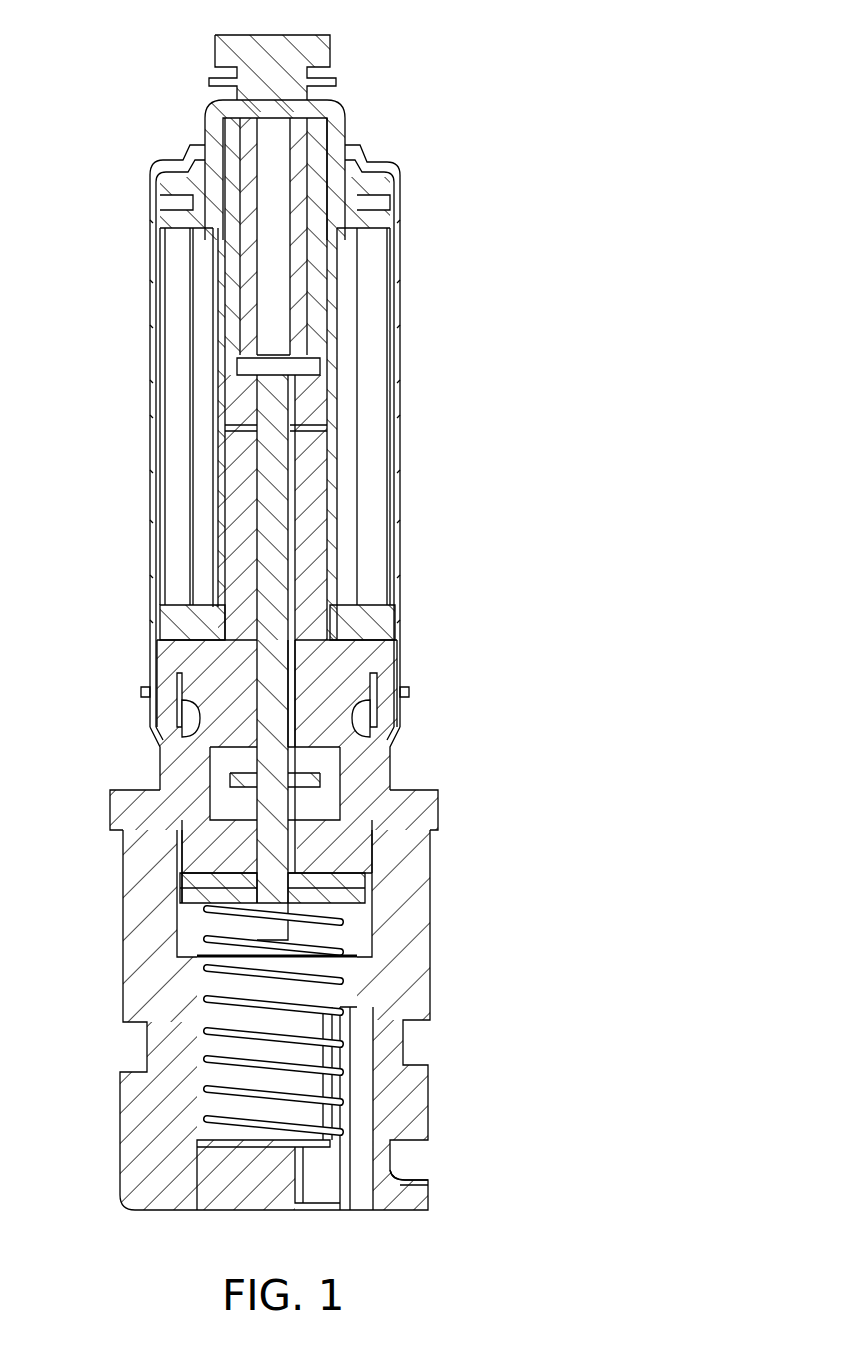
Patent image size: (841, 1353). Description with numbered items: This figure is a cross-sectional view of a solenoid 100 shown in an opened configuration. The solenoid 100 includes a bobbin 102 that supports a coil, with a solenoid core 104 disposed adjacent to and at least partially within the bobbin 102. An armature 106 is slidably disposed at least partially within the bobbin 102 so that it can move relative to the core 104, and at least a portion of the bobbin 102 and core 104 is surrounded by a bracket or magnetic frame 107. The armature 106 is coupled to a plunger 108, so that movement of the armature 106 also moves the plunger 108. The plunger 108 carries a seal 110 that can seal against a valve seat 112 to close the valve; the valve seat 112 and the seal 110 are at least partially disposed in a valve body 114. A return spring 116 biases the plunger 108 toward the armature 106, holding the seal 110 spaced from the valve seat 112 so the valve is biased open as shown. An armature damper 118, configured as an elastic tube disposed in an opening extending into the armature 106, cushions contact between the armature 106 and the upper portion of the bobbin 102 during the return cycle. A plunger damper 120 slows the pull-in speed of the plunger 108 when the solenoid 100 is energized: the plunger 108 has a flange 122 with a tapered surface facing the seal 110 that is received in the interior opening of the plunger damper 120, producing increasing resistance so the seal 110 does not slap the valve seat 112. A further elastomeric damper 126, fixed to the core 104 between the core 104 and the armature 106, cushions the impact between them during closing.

The solenoid 100 is at (100, 90).
The bobbin 102 is at (363, 618).
The solenoid core 104 is at (168, 665).
The armature 106 is at (322, 280).
The magnetic frame 107 is at (397, 440).
The plunger 108 is at (303, 797).
The seal 110 is at (357, 892).
The valve seat 112 is at (182, 966).
The valve body 114 is at (153, 897).
The return spring 116 is at (345, 982).
The armature damper 118 is at (300, 137).
The plunger damper 120 is at (353, 803).
The flange 122 is at (230, 800).
The damper 126 is at (320, 412).